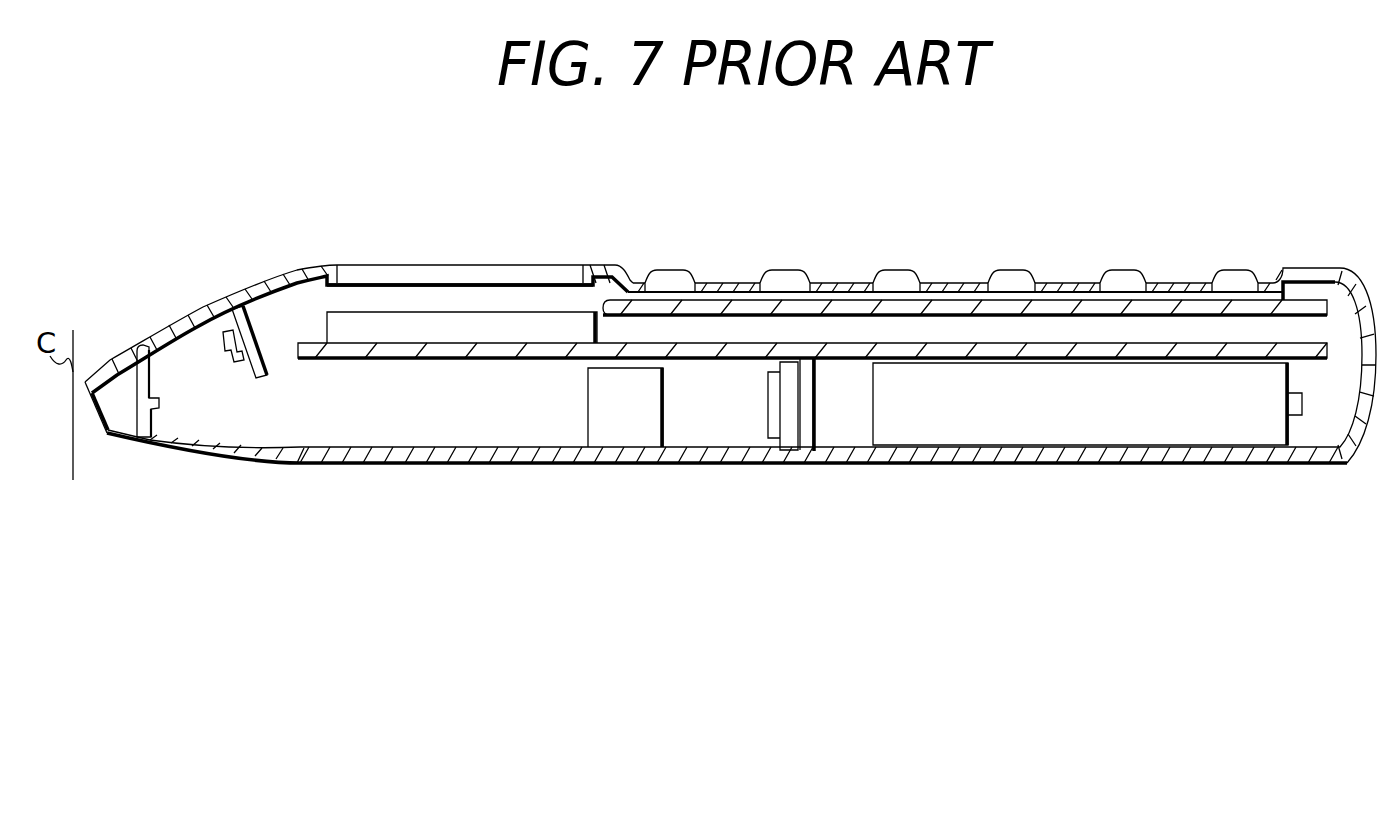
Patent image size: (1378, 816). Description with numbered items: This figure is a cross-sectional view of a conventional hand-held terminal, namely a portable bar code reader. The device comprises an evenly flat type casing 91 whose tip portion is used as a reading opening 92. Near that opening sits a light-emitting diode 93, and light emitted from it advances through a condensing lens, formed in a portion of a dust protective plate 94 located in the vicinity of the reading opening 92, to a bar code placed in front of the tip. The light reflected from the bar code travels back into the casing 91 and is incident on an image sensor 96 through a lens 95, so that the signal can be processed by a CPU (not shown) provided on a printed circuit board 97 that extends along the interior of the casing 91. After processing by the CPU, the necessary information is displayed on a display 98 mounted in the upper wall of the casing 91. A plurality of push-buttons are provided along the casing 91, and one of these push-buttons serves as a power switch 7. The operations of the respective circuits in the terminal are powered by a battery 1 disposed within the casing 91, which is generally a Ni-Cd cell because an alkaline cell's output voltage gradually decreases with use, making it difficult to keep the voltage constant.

The battery 1 is at (983, 417).
The power switch 7 is at (1233, 288).
The casing 91 is at (490, 463).
The reading opening 92 is at (88, 413).
The light-emitting diode 93 is at (225, 340).
The dust protective plate 94 is at (145, 385).
The lens 95 is at (625, 427).
The image sensor 96 is at (767, 402).
The printed circuit board 97 is at (840, 353).
The display 98 is at (383, 328).